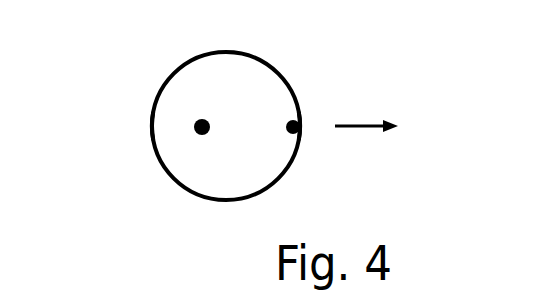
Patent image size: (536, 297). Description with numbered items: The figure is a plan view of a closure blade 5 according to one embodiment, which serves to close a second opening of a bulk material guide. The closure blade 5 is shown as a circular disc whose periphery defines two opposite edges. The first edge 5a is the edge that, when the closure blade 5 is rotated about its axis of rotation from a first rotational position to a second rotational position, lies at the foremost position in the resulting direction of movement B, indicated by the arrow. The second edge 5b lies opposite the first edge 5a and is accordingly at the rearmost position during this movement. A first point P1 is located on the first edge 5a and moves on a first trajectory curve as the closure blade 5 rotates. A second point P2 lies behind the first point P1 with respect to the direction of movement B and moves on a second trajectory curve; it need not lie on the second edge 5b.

The closure blade 5 is at (96, 78).
The first edge 5a is at (313, 134).
The second edge 5b is at (139, 135).
The first point P1 is at (292, 121).
The second point P2 is at (194, 130).
The direction of movement B is at (363, 124).